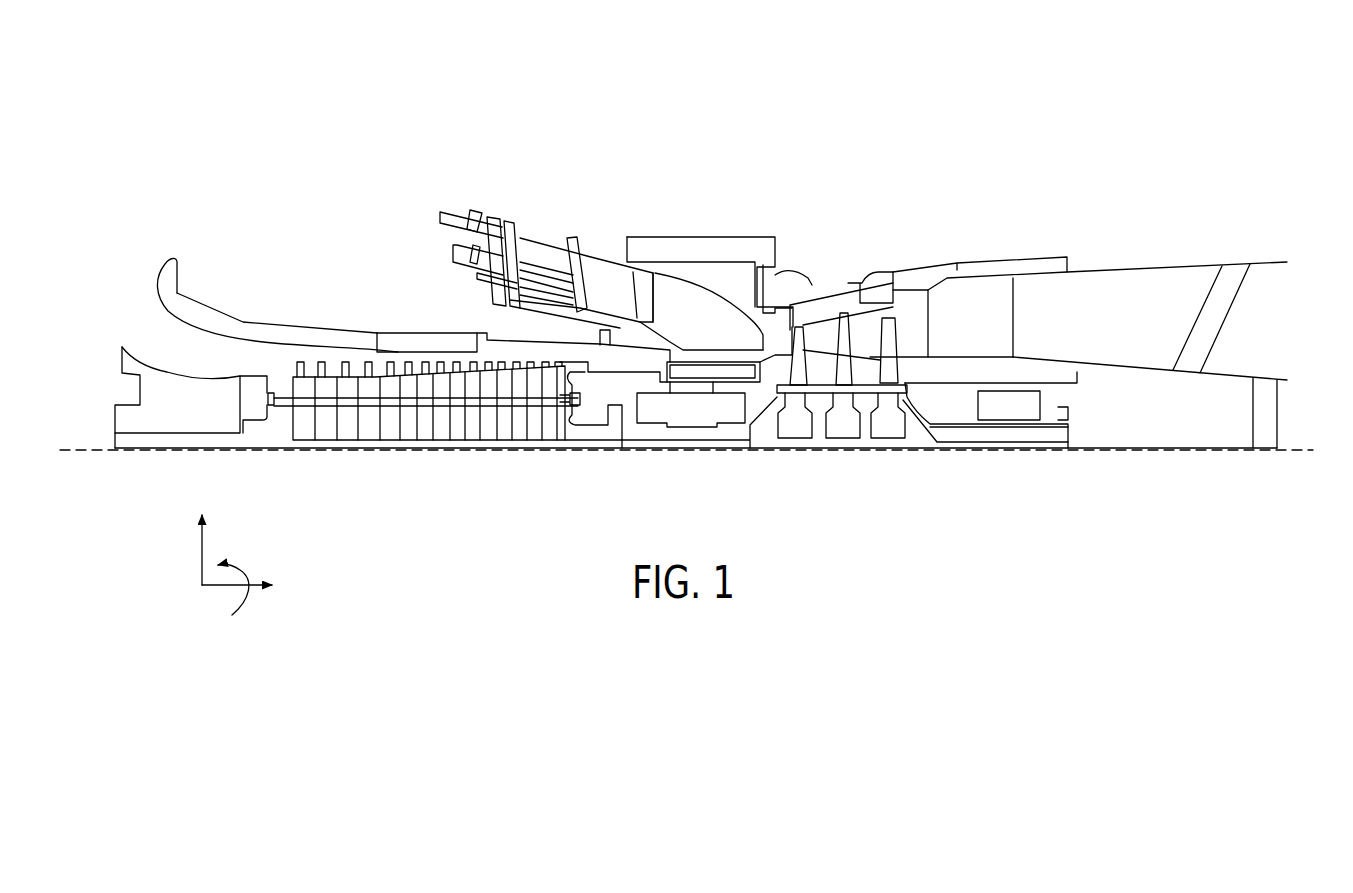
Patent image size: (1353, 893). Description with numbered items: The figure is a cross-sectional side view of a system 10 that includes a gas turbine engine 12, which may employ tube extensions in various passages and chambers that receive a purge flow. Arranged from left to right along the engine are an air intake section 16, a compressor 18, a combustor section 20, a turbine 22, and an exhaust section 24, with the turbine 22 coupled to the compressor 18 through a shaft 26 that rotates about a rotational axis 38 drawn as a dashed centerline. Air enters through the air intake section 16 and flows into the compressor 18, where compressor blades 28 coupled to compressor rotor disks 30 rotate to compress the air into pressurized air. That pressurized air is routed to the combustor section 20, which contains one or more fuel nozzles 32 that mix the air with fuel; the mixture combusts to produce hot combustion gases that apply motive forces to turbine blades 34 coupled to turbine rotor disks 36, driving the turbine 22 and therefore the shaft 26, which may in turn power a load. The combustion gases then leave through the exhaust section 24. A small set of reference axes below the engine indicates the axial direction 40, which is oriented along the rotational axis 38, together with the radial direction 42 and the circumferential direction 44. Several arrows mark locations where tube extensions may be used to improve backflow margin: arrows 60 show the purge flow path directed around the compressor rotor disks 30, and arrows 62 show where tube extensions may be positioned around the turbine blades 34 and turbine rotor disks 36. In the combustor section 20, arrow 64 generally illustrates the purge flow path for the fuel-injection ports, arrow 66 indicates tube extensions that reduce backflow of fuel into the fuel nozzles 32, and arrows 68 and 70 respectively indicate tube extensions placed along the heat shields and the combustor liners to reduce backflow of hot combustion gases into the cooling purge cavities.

The system 10 is at (243, 72).
The gas turbine engine 12 is at (613, 478).
The air intake section 16 is at (172, 355).
The compressor 18 is at (485, 301).
The combustor section 20 is at (580, 234).
The turbine 22 is at (894, 351).
The exhaust section 24 is at (1287, 230).
The shaft 26 is at (448, 410).
The compressor blades 28 is at (330, 370).
The compressor rotor disks 30 is at (318, 427).
The fuel nozzles 32 is at (546, 265).
The turbine blades 34 is at (845, 328).
The turbine rotor disks 36 is at (886, 364).
The rotational axis 38 is at (93, 455).
The axial direction 40 is at (232, 585).
The radial direction 42 is at (202, 555).
The circumferential direction 44 is at (247, 580).
The arrows 60 is at (427, 452).
The arrows 62 is at (872, 390).
The arrow 64 is at (516, 240).
The arrow 66 is at (557, 270).
The arrow 68 is at (555, 232).
The arrow 70 is at (678, 282).